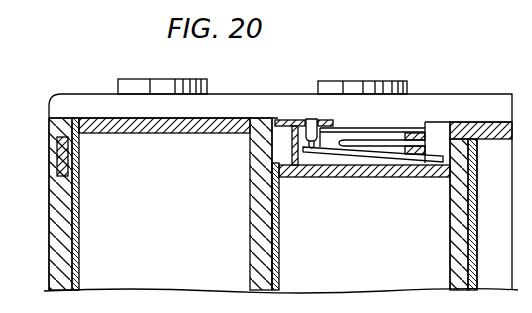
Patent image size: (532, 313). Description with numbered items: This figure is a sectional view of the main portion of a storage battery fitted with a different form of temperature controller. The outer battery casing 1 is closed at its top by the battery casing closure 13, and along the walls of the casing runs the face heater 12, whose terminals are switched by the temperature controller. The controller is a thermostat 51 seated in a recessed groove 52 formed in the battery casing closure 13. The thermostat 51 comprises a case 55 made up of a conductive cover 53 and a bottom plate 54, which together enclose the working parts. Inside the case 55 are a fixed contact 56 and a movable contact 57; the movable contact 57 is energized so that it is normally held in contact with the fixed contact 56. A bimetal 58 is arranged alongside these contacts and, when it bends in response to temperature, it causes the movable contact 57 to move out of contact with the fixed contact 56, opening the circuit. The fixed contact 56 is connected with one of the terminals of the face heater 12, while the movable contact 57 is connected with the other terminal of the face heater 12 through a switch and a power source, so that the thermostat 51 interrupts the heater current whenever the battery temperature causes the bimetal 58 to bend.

The battery casing 1 is at (52, 226).
The face heater 12 is at (78, 232).
The battery casing closure 13 is at (100, 128).
The thermostat 51 is at (350, 140).
The recessed groove 52 is at (446, 150).
The conductive cover 53 is at (385, 133).
The bottom plate 54 is at (338, 177).
The case 55 is at (413, 134).
The fixed contact 56 is at (312, 134).
The movable contact 57 is at (313, 150).
The bimetal 58 is at (382, 150).